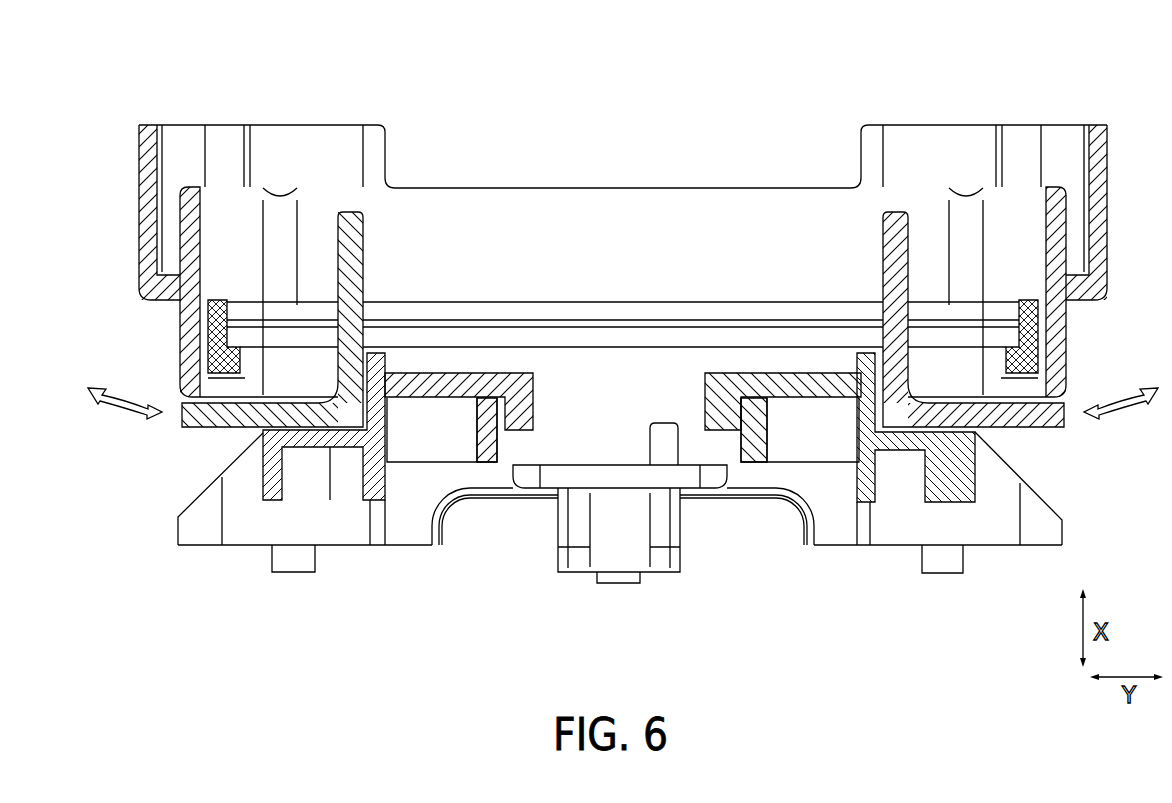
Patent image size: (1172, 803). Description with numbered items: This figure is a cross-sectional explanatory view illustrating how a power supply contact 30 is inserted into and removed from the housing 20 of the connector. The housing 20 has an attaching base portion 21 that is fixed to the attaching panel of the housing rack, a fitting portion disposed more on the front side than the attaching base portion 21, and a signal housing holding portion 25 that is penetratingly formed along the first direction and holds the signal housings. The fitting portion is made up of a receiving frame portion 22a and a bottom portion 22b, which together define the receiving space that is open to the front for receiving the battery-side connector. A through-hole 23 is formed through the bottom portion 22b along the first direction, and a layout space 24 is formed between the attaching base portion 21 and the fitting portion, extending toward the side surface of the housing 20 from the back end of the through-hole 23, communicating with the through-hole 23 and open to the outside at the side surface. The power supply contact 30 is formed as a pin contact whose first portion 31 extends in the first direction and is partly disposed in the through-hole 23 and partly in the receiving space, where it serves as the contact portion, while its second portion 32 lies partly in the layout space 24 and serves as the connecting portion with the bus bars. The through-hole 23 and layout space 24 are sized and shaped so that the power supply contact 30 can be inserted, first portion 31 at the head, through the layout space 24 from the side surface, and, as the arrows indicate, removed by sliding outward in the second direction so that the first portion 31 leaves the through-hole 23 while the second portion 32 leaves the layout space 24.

The housing 20 is at (137, 191).
The attaching base portion 21 is at (835, 514).
The receiving frame portion 22a is at (197, 187).
The bottom portion 22b is at (511, 392).
The through-hole 23 is at (330, 362).
The layout space 24 is at (237, 436).
The signal housing holding portion 25 is at (558, 420).
The power supply contact 30 is at (338, 207).
The first portion 31 is at (352, 263).
The second portion 32 is at (182, 428).